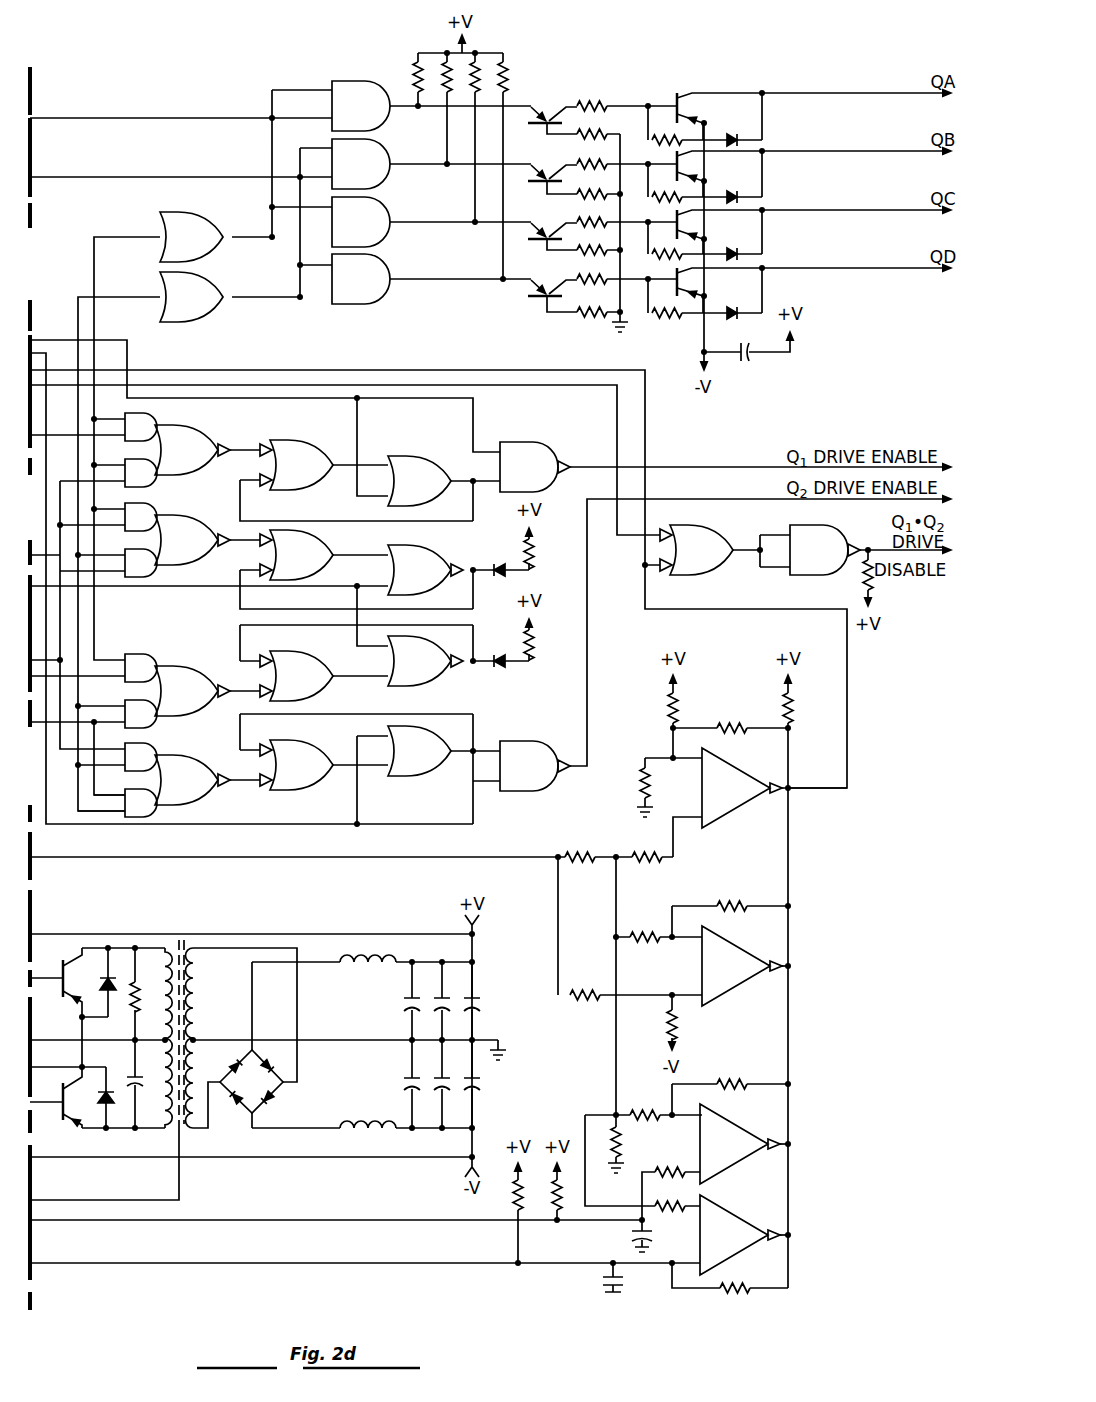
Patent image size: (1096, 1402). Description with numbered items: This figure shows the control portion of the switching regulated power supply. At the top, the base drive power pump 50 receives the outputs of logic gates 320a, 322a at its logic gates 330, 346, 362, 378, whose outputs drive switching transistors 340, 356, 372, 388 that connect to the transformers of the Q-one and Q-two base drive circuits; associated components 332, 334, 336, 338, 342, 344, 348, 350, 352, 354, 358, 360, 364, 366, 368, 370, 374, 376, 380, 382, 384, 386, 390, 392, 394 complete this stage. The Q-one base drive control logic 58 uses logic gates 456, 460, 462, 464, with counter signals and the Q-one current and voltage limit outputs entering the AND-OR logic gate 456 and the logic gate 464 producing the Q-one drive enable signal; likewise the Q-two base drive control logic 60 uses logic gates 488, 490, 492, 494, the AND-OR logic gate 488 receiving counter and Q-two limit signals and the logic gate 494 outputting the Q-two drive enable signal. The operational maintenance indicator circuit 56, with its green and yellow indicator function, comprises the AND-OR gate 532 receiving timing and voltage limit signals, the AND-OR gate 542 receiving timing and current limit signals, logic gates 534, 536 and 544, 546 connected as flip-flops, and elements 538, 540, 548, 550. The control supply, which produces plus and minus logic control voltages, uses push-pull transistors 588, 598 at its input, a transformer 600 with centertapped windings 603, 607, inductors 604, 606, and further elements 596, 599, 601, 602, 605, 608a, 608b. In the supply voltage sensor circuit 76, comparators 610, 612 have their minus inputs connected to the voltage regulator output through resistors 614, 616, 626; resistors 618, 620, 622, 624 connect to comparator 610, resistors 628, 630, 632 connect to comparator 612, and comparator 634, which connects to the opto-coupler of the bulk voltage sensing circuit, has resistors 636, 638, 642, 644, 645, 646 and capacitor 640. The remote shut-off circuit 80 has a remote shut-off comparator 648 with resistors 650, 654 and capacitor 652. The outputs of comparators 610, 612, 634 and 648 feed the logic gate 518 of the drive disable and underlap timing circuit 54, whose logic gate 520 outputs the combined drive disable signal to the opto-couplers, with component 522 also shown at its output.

The base drive power pump 50 is at (745, 48).
The drive disable and underlap timing circuit 54 is at (825, 521).
The operational maintenance indicator circuit 56 is at (500, 697).
The Q1 base drive control logic 58 is at (222, 431).
The Q2 base drive control logic 60 is at (225, 800).
The supply voltage sensor circuit 76 is at (645, 652).
The remote shut-off circuit 80 is at (682, 1314).
The logic gate 320a is at (191, 237).
The logic gate 322a is at (191, 297).
The logic gate 330 is at (361, 106).
The resistor 332 is at (415, 76).
The transistor 334 is at (552, 108).
The resistor 336 is at (595, 125).
The resistor 338 is at (595, 96).
The switching transistor 340 is at (719, 116).
The resistor 342 is at (658, 147).
The diode 344 is at (733, 129).
The logic gate 346 is at (361, 164).
The resistor 348 is at (442, 78).
The transistor 350 is at (552, 168).
The resistor 352 is at (594, 185).
The resistor 354 is at (594, 154).
The switching transistor 356 is at (719, 174).
The resistor 358 is at (659, 205).
The diode 360 is at (733, 185).
The logic gate 362 is at (361, 222).
The resistor 364 is at (472, 78).
The transistor 366 is at (552, 225).
The resistor 368 is at (594, 241).
The resistor 370 is at (594, 212).
The switching transistor 372 is at (719, 232).
The resistor 374 is at (658, 263).
The diode 376 is at (733, 243).
The logic gate 378 is at (361, 279).
The resistor 380 is at (500, 82).
The transistor 382 is at (552, 285).
The resistor 384 is at (594, 302).
The resistor 386 is at (594, 270).
The switching transistor 388 is at (719, 290).
The resistor 390 is at (662, 322).
The diode 392 is at (733, 303).
The capacitor 394 is at (750, 360).
The AND-OR logic gate 456 is at (177, 450).
The logic gate 460 is at (296, 465).
The logic gate 462 is at (419, 481).
The logic gate 464 is at (535, 467).
The AND-OR logic gate 488 is at (177, 780).
The logic gate 490 is at (296, 765).
The logic gate 492 is at (419, 751).
The logic gate 494 is at (535, 766).
The logic gate 518 is at (696, 550).
The logic gate 520 is at (825, 550).
The resistor 522 is at (885, 579).
The AND-OR gate 532 is at (177, 540).
The logic gate 534 is at (296, 555).
The logic gate 536 is at (425, 570).
The electrical element 538 is at (504, 568).
The electrical element 540 is at (532, 568).
The AND-OR gate 542 is at (177, 691).
The logic gate 544 is at (296, 676).
The logic gate 546 is at (425, 661).
The electrical element 548 is at (504, 659).
The electrical element 550 is at (532, 659).
The push-pull transistor 588 is at (70, 990).
The electrical element 596 is at (100, 978).
The push-pull transistor 598 is at (70, 1113).
The electrical element 599 is at (107, 1106).
The transformer 600 is at (190, 945).
The electrical element 601 is at (143, 1089).
The electrical element 602 is at (130, 988).
The winding 603 is at (165, 1027).
The inductor 604 is at (390, 962).
The electrical element 605 is at (282, 1105).
The inductor 606 is at (395, 1128).
The winding 607 is at (197, 1024).
The electrical element 608a is at (492, 998).
The electrical element 608b is at (484, 1098).
The comparator 610 is at (740, 778).
The comparator 612 is at (741, 952).
The resistor 614 is at (596, 856).
The resistor 616 is at (655, 856).
The resistor 618 is at (642, 796).
The resistor 620 is at (665, 716).
The resistor 622 is at (746, 726).
The resistor 624 is at (795, 716).
The resistor 626 is at (598, 993).
The resistor 628 is at (678, 1036).
The resistor 630 is at (658, 935).
The resistor 632 is at (744, 905).
The comparator 634 is at (741, 1128).
The resistor 636 is at (683, 1171).
The resistor 638 is at (560, 1198).
The capacitor 640 is at (644, 1242).
The resistor 642 is at (621, 1146).
The resistor 644 is at (656, 1114).
The resistor 645 is at (683, 1204).
The resistor 646 is at (744, 1083).
The remote shut-off comparator 648 is at (740, 1211).
The resistor 650 is at (518, 1190).
The capacitor 652 is at (612, 1277).
The resistor 654 is at (738, 1292).